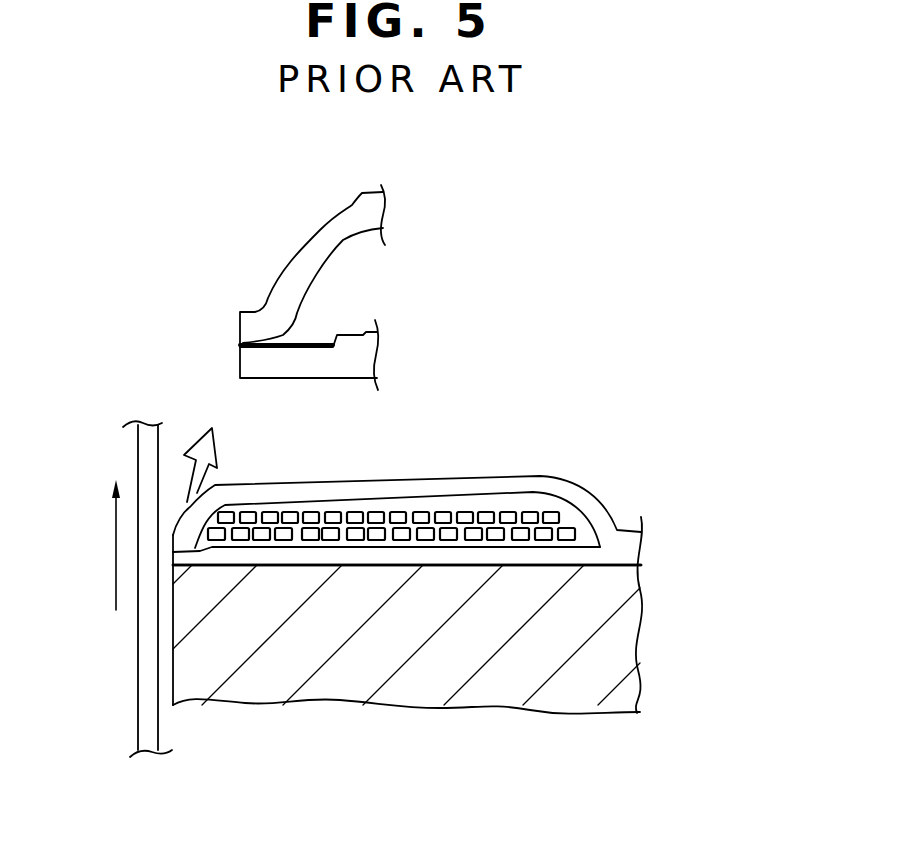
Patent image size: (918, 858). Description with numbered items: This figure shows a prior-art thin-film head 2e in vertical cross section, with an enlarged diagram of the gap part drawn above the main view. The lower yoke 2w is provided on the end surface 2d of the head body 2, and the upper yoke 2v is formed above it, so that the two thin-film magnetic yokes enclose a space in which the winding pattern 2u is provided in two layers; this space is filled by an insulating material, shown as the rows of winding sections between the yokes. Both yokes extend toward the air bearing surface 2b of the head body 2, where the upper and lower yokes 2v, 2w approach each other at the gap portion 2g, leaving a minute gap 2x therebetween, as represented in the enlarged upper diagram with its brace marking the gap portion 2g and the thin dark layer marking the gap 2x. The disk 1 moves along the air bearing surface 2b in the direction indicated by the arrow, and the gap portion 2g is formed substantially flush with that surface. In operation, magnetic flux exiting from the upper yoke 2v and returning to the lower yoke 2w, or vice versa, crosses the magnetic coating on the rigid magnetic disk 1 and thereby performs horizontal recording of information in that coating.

The disk 1 is at (160, 736).
The head body 2 is at (608, 653).
The air bearing surface 2b is at (173, 640).
The end surface 2d is at (613, 564).
The thin-film head 2e is at (467, 413).
The gap portion 2g is at (226, 305).
The winding pattern 2u is at (553, 513).
The upper yoke 2v is at (487, 474).
The lower yoke 2w is at (393, 555).
The gap 2x is at (240, 345).